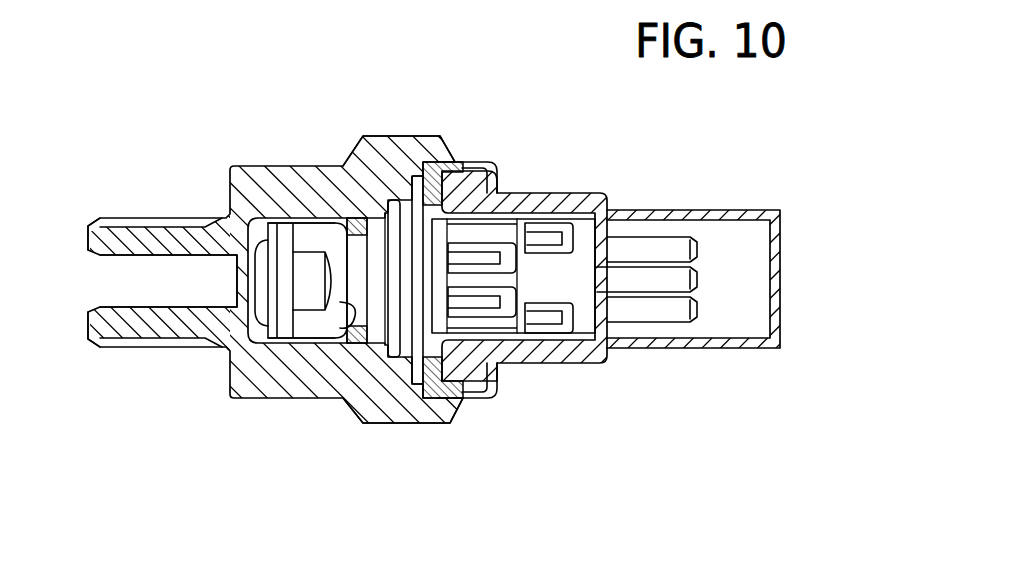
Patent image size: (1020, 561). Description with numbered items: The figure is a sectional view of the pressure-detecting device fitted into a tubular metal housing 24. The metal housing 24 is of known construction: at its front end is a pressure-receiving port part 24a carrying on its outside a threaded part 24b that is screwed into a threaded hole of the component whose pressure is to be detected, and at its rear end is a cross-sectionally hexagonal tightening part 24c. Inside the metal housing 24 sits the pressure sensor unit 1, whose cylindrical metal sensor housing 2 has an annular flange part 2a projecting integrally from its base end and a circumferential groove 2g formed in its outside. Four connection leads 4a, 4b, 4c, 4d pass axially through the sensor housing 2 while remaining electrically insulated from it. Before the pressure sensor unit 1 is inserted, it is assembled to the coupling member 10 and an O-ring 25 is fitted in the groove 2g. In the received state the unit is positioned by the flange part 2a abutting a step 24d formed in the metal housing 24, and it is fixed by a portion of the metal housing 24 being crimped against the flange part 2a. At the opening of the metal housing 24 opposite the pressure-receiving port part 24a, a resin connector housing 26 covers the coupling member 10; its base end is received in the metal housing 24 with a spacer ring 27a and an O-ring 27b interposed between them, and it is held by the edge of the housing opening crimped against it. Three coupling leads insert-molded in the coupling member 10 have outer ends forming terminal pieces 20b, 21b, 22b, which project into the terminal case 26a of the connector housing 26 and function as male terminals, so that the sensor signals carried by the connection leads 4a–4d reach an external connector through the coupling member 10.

The pressure sensor unit 1 is at (308, 208).
The sensor housing 2 is at (310, 328).
The flange part 2a is at (401, 385).
The circumferential groove 2g is at (340, 328).
The connection lead 4a is at (486, 256).
The connection lead 4b is at (490, 312).
The connection lead 4c is at (553, 238).
The connection lead 4d is at (550, 324).
The coupling member 10 is at (521, 209).
The terminal piece 20b is at (697, 250).
The terminal piece 21b is at (697, 310).
The terminal piece 22b is at (697, 280).
The metal housing 24 is at (240, 165).
The pressure-receiving port part 24a is at (88, 325).
The threaded part 24b is at (120, 218).
The tightening part 24c is at (390, 136).
The step 24d is at (390, 363).
The O-ring 25 is at (352, 343).
The connector housing 26 is at (608, 193).
The terminal case 26a is at (698, 210).
The spacer ring 27a is at (437, 162).
The O-ring 27b is at (467, 162).